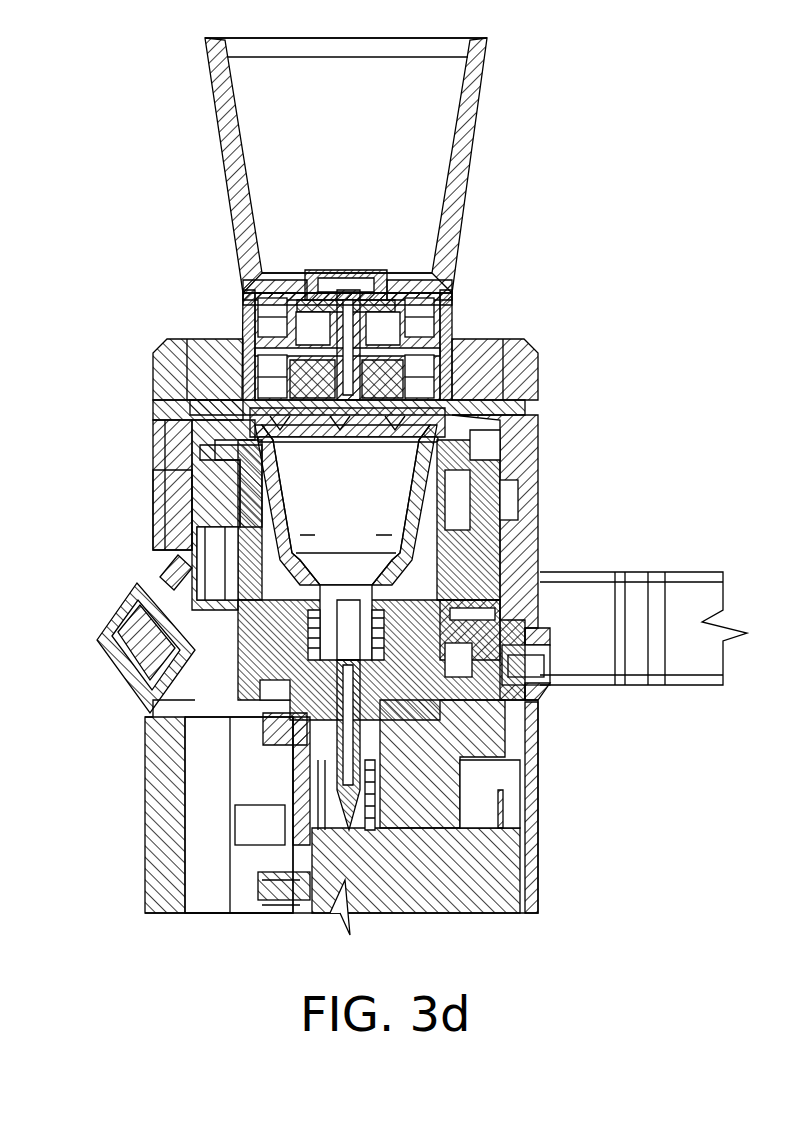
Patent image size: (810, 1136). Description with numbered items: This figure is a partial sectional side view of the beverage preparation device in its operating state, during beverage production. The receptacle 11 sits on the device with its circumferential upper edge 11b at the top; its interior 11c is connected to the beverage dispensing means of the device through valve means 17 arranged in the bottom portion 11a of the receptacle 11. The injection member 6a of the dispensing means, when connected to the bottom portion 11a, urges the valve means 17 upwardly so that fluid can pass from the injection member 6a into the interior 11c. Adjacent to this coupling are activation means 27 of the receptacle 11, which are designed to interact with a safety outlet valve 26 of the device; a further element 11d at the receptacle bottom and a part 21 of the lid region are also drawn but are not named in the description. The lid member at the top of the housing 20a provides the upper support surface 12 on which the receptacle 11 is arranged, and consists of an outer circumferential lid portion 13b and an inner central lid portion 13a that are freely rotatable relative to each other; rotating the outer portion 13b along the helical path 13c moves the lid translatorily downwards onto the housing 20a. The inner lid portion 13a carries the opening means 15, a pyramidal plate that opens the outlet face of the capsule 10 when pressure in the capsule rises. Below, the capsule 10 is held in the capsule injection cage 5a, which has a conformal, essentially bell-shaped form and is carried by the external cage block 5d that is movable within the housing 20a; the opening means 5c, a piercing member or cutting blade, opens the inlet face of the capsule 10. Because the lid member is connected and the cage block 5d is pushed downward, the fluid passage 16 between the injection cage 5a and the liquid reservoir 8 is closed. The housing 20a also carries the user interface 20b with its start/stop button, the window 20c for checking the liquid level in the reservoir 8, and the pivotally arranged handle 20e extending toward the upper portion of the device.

The receptacle 11 is at (490, 42).
The circumferential upper edge 11b is at (490, 42).
The interior of the receptacle 11c is at (364, 139).
The bottom portion of the receptacle 11a is at (440, 340).
The hopper bottom plate 11d is at (272, 298).
The injection member 6a is at (335, 290).
The valve means 17 is at (445, 320).
The activation means 27 is at (448, 332).
The safety outlet valve 26 is at (500, 345).
The upper support surface 12 is at (210, 338).
The housing insert 21 is at (236, 345).
The inner central lid portion 13a is at (205, 367).
The outer circumferential lid portion 13b is at (170, 400).
The helical path 13c is at (165, 500).
The pyramidal plate 15 is at (500, 382).
The capsule injection cage 5a is at (540, 420).
The external cage block 5d is at (168, 462).
The opening means 5c is at (430, 545).
The capsule 10 is at (358, 491).
The user interface 20b is at (150, 592).
The handle 20e is at (667, 575).
The housing 20a is at (540, 810).
The window 20c is at (165, 835).
The liquid reservoir 8 is at (214, 777).
The fluid passage 16 is at (368, 672).